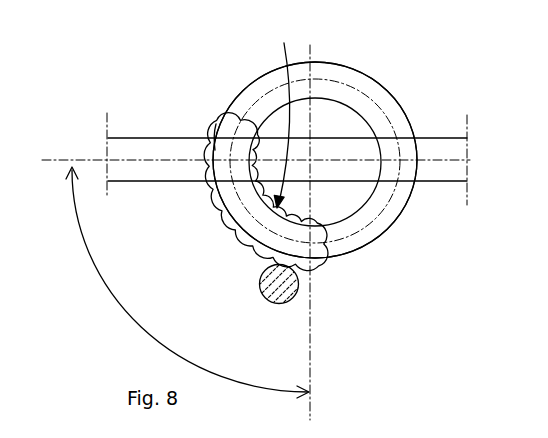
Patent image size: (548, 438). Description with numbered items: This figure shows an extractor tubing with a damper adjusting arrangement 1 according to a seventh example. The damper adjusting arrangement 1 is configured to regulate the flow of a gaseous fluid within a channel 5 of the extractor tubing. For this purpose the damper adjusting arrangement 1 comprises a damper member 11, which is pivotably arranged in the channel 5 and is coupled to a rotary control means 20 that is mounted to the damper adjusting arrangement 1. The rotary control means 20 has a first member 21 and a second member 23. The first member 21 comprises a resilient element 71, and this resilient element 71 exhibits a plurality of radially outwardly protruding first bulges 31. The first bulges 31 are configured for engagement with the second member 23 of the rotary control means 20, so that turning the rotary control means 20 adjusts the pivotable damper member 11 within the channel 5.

The damper adjusting arrangement 1 is at (432, 319).
The channel 5 is at (160, 69).
The damper member 11 is at (433, 182).
The rotary control means 20 is at (353, 317).
The first member 21 is at (228, 102).
The second member 23 is at (300, 295).
The first bulges 31 is at (232, 232).
The resilient element 71 is at (280, 113).